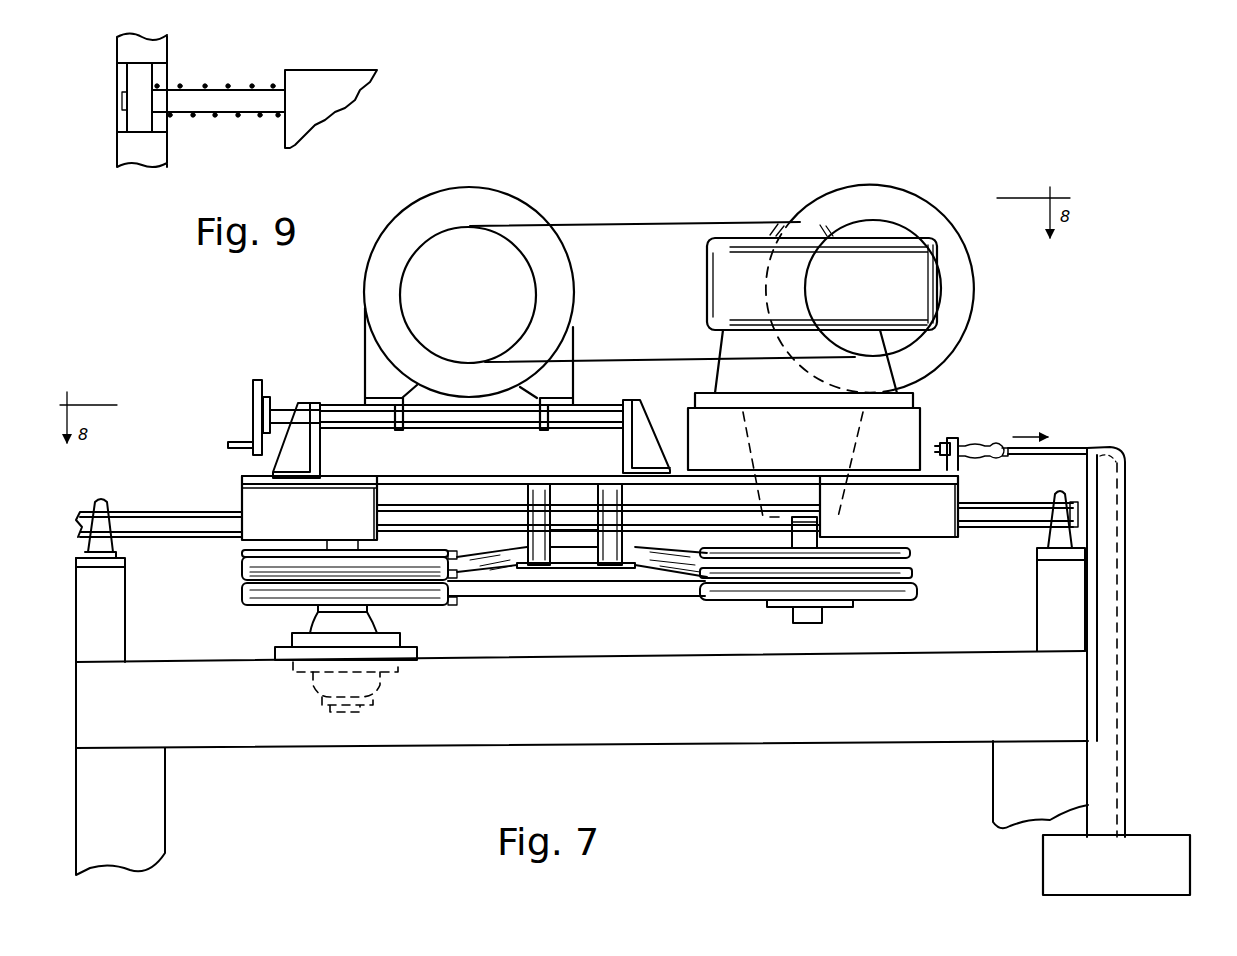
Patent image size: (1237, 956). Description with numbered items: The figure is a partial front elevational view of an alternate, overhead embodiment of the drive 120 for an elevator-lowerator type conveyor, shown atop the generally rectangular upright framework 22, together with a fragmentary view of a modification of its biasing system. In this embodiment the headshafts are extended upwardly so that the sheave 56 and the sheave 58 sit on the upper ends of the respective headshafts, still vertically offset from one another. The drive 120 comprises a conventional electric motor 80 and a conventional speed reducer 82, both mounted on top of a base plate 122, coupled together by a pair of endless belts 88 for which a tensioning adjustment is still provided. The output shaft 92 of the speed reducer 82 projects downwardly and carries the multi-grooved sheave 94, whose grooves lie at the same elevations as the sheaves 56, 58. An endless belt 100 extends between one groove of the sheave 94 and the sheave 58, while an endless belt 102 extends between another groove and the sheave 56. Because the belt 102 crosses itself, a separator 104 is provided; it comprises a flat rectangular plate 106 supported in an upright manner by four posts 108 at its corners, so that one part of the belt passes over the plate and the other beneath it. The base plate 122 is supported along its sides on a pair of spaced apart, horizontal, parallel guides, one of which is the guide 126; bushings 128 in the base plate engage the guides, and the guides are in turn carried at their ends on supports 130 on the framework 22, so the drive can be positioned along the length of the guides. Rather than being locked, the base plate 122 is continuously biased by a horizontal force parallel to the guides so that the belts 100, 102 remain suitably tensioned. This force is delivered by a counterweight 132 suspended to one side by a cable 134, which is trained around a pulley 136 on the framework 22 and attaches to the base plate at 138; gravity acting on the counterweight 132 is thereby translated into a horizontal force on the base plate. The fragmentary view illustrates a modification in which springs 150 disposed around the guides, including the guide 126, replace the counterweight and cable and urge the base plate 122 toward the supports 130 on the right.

In FIG. 7, the framework 22 is at (880, 725).
In FIG. 7, the sheave 56 is at (240, 553).
In FIG. 7, the sheave 58 is at (240, 605).
In FIG. 7, the electric motor 80 is at (497, 190).
In FIG. 7, the speed reducer 82 is at (895, 186).
In FIG. 7, the endless belts 88 is at (590, 222).
In FIG. 7, the output shaft 92 is at (822, 612).
In FIG. 7, the multi-grooved sheave 94 is at (913, 568).
In FIG. 7, the endless belt 100 is at (452, 592).
In FIG. 7, the endless belt 102 is at (240, 572).
In FIG. 7, the separator 104 is at (612, 567).
In FIG. 7, the flat rectangular plate 106 is at (565, 567).
In FIG. 7, the posts 108 is at (597, 498).
In FIG. 7, the drive 120 is at (972, 330).
In FIG. 9, the base plate 122 is at (300, 70).
In FIG. 7, the base plate 122 is at (415, 477).
In FIG. 9, the guide 126 is at (218, 100).
In FIG. 7, the guide 126 is at (985, 513).
In FIG. 7, the bushings 128 is at (253, 507).
In FIG. 9, the supports 130 is at (137, 82).
In FIG. 7, the supports 130 is at (1062, 517).
In FIG. 7, the counterweight 132 is at (1145, 855).
In FIG. 7, the cable 134 is at (1075, 447).
In FIG. 7, the pulley 136 is at (1085, 479).
In FIG. 7, the attachment point 138 is at (960, 437).
In FIG. 9, the springs 150 is at (207, 86).